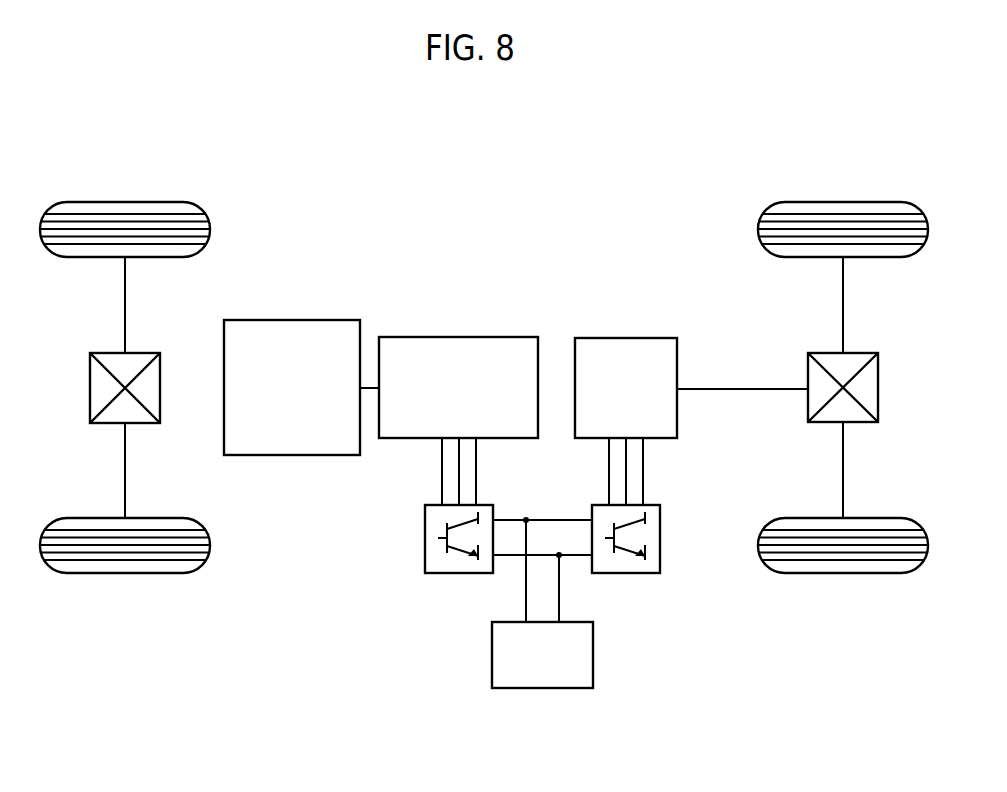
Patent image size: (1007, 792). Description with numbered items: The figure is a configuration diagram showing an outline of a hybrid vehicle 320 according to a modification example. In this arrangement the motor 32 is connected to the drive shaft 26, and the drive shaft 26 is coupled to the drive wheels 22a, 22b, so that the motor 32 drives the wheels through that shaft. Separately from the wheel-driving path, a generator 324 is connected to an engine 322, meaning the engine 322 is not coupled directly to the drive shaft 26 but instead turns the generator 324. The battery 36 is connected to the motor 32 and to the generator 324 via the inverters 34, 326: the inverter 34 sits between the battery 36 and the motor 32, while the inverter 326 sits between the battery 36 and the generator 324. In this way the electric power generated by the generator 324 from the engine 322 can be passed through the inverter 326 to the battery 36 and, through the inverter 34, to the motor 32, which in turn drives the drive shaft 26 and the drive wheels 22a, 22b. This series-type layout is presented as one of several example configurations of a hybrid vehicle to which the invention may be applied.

The hybrid vehicle 320 is at (592, 171).
The drive wheel 22a is at (845, 202).
The drive wheel 22b is at (843, 573).
The drive shaft 26 is at (711, 387).
The motor 32 is at (626, 338).
The inverter 34 is at (660, 537).
The battery 36 is at (593, 652).
The engine 322 is at (293, 318).
The generator 324 is at (459, 337).
The inverter 326 is at (425, 538).